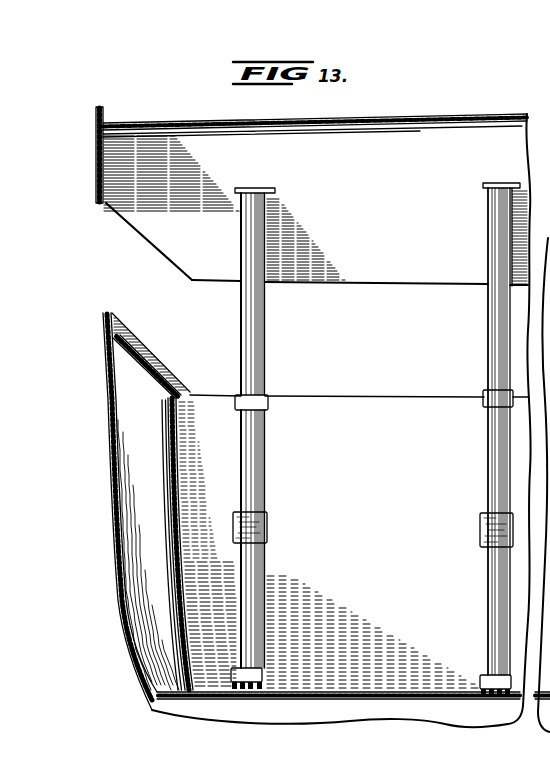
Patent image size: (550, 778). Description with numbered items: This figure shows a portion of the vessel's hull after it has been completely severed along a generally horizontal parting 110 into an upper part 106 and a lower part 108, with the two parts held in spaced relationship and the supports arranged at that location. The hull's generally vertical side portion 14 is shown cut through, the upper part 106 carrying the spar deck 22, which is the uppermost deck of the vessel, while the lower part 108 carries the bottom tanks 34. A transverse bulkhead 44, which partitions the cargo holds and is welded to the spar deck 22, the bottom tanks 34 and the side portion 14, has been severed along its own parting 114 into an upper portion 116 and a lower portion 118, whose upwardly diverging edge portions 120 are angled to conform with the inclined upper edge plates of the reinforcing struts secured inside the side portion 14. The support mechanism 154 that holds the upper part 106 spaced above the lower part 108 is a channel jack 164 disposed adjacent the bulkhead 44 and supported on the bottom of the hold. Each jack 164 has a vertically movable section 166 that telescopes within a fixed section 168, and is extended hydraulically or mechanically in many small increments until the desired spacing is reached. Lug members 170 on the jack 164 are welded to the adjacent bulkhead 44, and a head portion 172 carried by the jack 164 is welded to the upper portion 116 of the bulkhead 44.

The side portion 14 is at (110, 562).
The spar deck 22 is at (387, 120).
The bottom tank 34 is at (378, 712).
The bulkhead 44 is at (395, 227).
The upper part 106 is at (88, 156).
The lower part 108 is at (93, 360).
The parting 110 is at (93, 247).
The parting 114 is at (430, 397).
The upper portion 116 is at (180, 147).
The lower portion 118 is at (370, 397).
The upwardly diverging edge portion 120 is at (168, 260).
The support mechanism 154 is at (300, 613).
The channel jack 164 is at (265, 486).
The vertically movable section 166 is at (265, 358).
The fixed section 168 is at (258, 660).
The lug member 170 is at (268, 410).
The head portion 172 is at (275, 191).